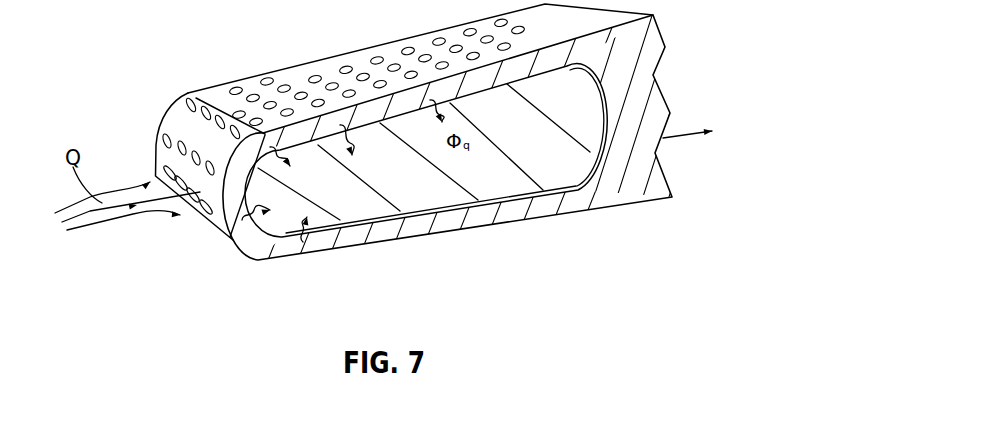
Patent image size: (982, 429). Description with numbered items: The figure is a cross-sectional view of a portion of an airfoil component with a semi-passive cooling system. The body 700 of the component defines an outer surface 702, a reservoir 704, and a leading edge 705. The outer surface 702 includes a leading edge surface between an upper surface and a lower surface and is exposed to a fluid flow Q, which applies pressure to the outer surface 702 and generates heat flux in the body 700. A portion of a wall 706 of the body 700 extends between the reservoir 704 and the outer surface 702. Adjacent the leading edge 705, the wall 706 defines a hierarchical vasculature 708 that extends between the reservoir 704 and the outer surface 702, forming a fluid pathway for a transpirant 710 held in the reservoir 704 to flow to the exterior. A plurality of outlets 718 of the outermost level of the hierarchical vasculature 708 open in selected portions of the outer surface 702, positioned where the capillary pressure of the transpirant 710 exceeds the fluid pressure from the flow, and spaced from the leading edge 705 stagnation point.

The body 700 is at (678, 63).
The outer surface 702 is at (237, 113).
The reservoir 704 is at (582, 192).
The leading edge 705 is at (156, 160).
The wall 706 is at (233, 187).
The hierarchical vasculature 708 is at (310, 160).
The transpirant 710 is at (497, 190).
The outlets 718 is at (414, 72).